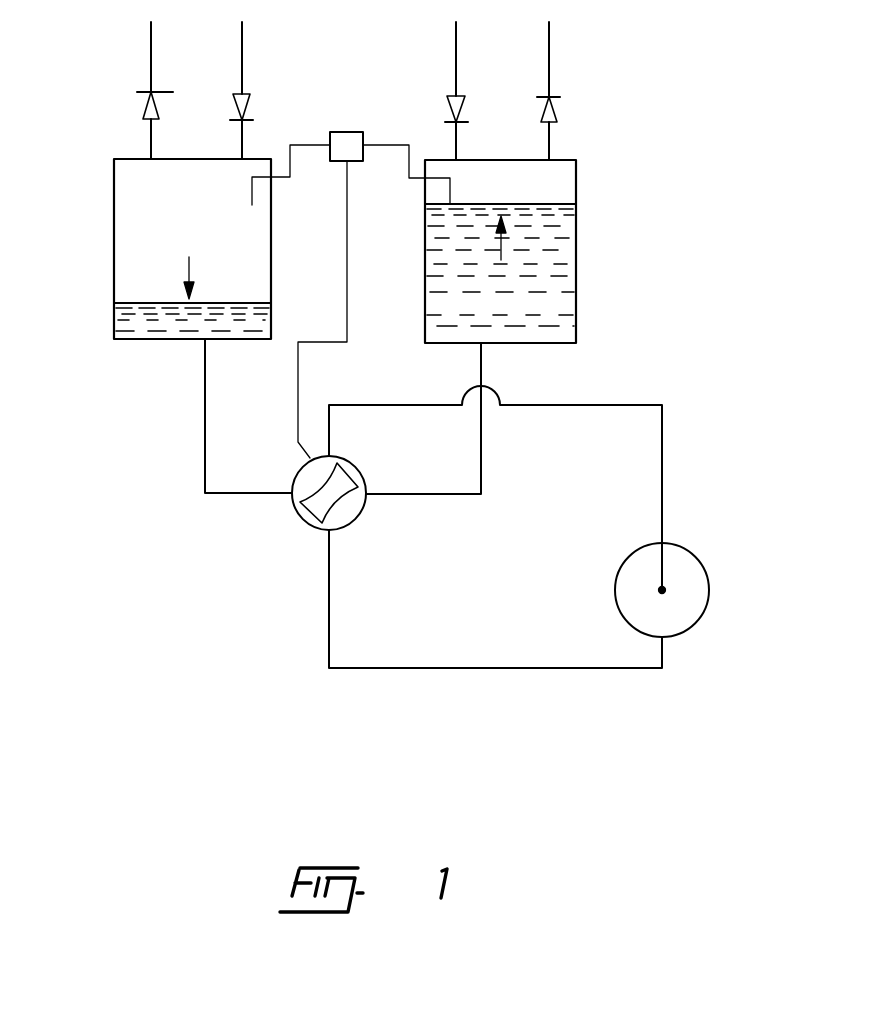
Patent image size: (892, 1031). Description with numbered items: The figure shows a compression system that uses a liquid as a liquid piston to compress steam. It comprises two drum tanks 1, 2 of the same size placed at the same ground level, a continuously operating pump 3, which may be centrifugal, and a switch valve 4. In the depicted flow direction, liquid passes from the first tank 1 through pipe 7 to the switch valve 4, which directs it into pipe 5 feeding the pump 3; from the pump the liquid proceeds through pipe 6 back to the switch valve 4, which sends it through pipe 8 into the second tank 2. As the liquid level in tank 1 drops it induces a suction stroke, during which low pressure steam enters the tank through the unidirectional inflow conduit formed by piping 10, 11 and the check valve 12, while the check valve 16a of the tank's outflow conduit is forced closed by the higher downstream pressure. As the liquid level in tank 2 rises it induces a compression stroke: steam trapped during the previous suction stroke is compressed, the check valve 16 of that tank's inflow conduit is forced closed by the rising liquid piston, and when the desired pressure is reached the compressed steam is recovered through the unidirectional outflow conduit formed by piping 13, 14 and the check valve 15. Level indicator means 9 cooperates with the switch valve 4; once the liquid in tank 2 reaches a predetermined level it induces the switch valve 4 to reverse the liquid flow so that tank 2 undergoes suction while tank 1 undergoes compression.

The drum tank 1 is at (113, 265).
The drum tank 2 is at (577, 263).
The pump 3 is at (708, 576).
The switch valve 4 is at (302, 518).
The pipe 5 is at (397, 403).
The pipe 6 is at (330, 618).
The pipe 7 is at (228, 492).
The pipe 8 is at (412, 493).
The level indicator means 9 is at (347, 140).
The piping 10 is at (241, 130).
The piping 11 is at (243, 61).
The check valve 12 is at (246, 105).
The piping 13 is at (552, 145).
The piping 14 is at (550, 58).
The check valve 15 is at (554, 109).
The check valve 16 is at (461, 106).
The check valve 16a is at (147, 108).